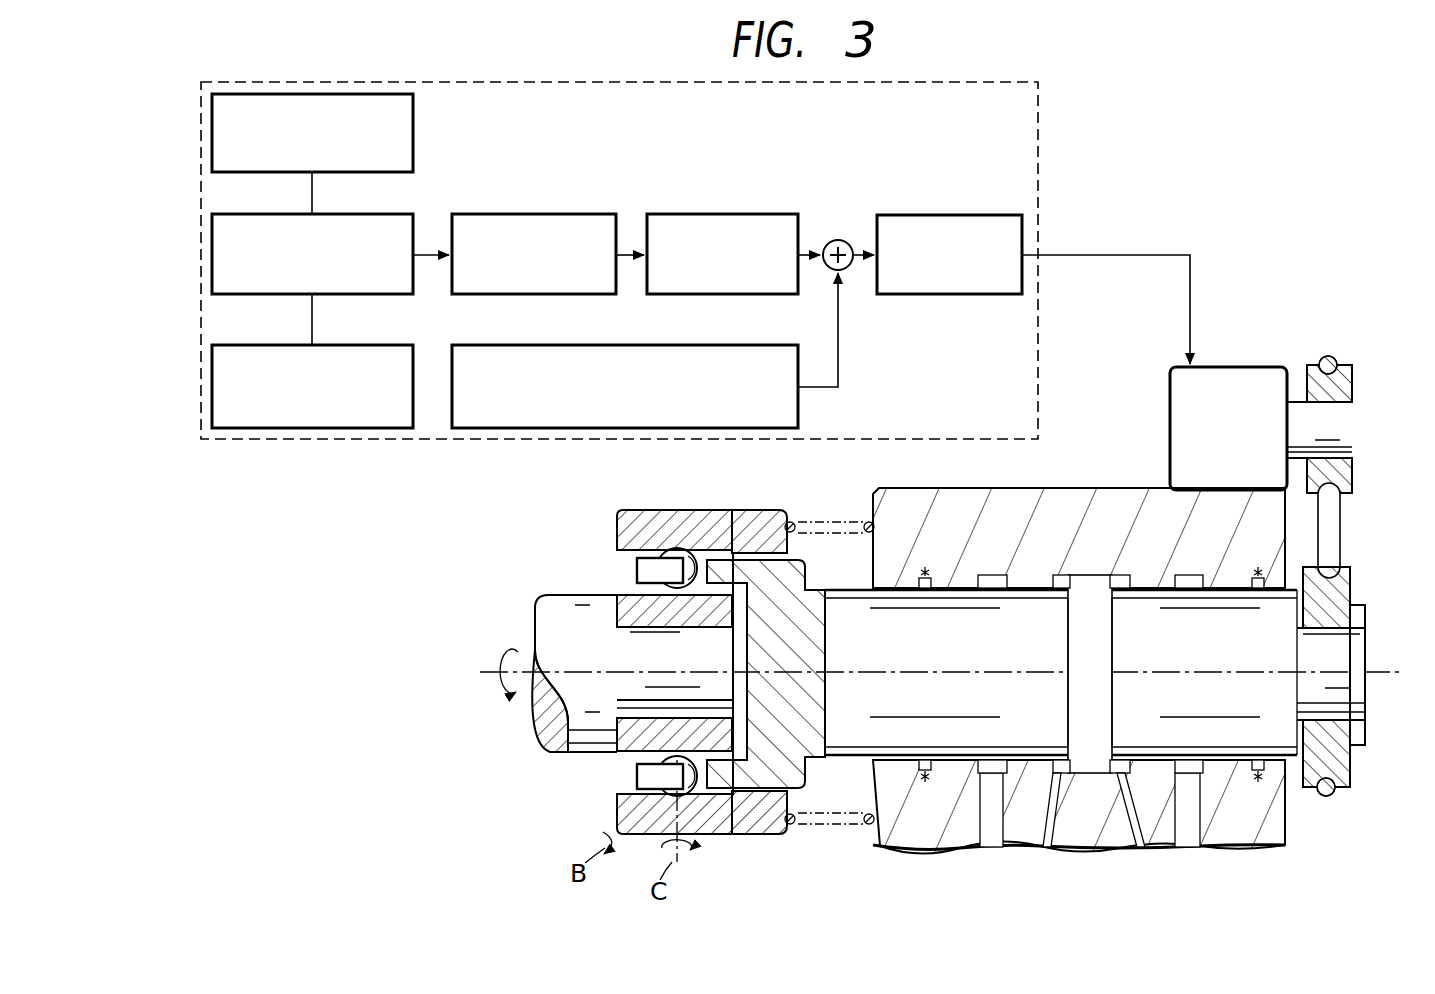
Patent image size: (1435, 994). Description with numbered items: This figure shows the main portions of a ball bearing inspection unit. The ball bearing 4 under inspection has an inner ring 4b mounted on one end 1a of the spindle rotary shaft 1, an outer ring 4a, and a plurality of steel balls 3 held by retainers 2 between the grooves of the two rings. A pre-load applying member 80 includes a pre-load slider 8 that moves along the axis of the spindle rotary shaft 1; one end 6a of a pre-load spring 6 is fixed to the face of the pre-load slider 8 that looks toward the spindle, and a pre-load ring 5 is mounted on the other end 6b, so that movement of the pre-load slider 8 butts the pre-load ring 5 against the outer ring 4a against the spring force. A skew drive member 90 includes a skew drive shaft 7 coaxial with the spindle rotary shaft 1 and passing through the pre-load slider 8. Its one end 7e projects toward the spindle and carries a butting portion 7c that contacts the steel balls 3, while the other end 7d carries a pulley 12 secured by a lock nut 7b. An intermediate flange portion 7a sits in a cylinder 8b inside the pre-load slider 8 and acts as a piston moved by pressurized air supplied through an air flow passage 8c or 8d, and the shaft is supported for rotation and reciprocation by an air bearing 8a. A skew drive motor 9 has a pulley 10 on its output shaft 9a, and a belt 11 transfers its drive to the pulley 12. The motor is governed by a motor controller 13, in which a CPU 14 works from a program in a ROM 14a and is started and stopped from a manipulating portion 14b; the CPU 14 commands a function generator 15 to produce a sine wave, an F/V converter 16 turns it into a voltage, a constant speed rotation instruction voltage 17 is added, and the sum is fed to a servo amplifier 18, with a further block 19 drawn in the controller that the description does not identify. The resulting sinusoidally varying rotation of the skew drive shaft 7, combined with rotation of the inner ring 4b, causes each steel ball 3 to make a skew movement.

The spindle rotary shaft 1 is at (542, 625).
The one end of spindle rotary shaft 1a is at (683, 703).
The retainer 2 is at (640, 568).
The steel ball 3 is at (668, 548).
The ball bearing 4 is at (689, 507).
The outer ring 4a is at (617, 512).
The inner ring 4b is at (630, 598).
The pre-load ring 5 is at (752, 510).
The pre-load spring 6 is at (832, 520).
The one end of pre-load spring 6a is at (868, 522).
The other end of pre-load spring 6b is at (791, 521).
The skew drive shaft 7 is at (1035, 750).
The flange portion 7a is at (1115, 700).
The lock nut 7b is at (1365, 615).
The butting portion 7c is at (720, 777).
The other end of skew drive shaft 7d is at (1360, 660).
The one end of skew drive shaft 7e is at (810, 795).
The pre-load slider 8 is at (953, 838).
The air bearing 8a is at (920, 785).
The cylinder 8b is at (1125, 575).
The air flow passage 8c is at (1050, 828).
The air flow passage 8d is at (1142, 835).
The skew drive motor 9 is at (1170, 390).
The output shaft 9a is at (1345, 425).
The pulley 10 is at (1352, 382).
The belt 11 is at (1328, 356).
The pulley 12 is at (1350, 595).
The motor controller 13 is at (1038, 120).
The CPU 14 is at (395, 214).
The ROM 14a is at (416, 101).
The manipulating portion 14b is at (385, 345).
The function generator 15 is at (585, 214).
The F/V converter 16 is at (773, 214).
The constant speed rotation instruction voltage 17 is at (745, 345).
The servo amplifier 18 is at (833, 240).
The servo amplifier 19 is at (1000, 215).
The pre-load applying member 80 is at (1318, 843).
The skew drive member 90 is at (838, 774).